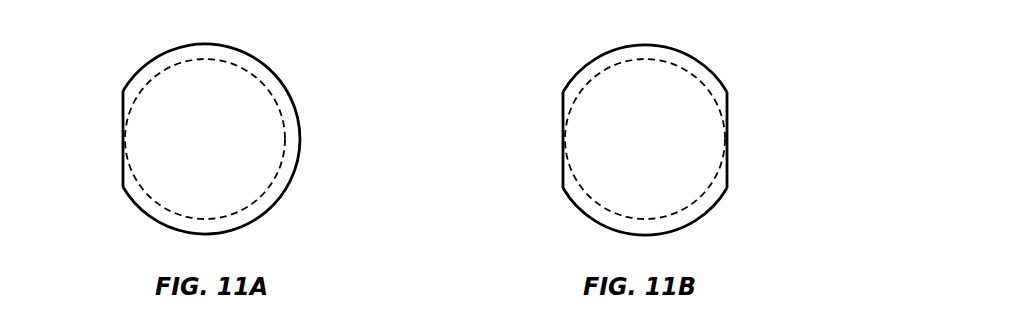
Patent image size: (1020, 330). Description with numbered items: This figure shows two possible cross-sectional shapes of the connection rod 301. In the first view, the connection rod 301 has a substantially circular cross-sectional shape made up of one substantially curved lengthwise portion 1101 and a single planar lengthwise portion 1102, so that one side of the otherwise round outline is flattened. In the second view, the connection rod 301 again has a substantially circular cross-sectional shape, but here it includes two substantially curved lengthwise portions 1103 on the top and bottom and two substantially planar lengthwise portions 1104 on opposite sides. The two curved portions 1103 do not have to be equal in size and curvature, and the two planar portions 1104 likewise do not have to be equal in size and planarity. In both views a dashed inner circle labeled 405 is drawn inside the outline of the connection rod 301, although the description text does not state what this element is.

In FIG. 11A, the connection rod 301 is at (205, 134).
In FIG. 11B, the connection rod 301 is at (653, 128).
In FIG. 11A, the inner bore 405 is at (265, 83).
In FIG. 11B, the inner bore 405 is at (663, 65).
In FIG. 11A, the curved lengthwise portion 1101 is at (141, 67).
In FIG. 11A, the planar lengthwise portion 1102 is at (122, 140).
In FIG. 11B, the curved lengthwise portions 1103 is at (588, 63).
In FIG. 11B, the planar lengthwise portions 1104 is at (562, 135).